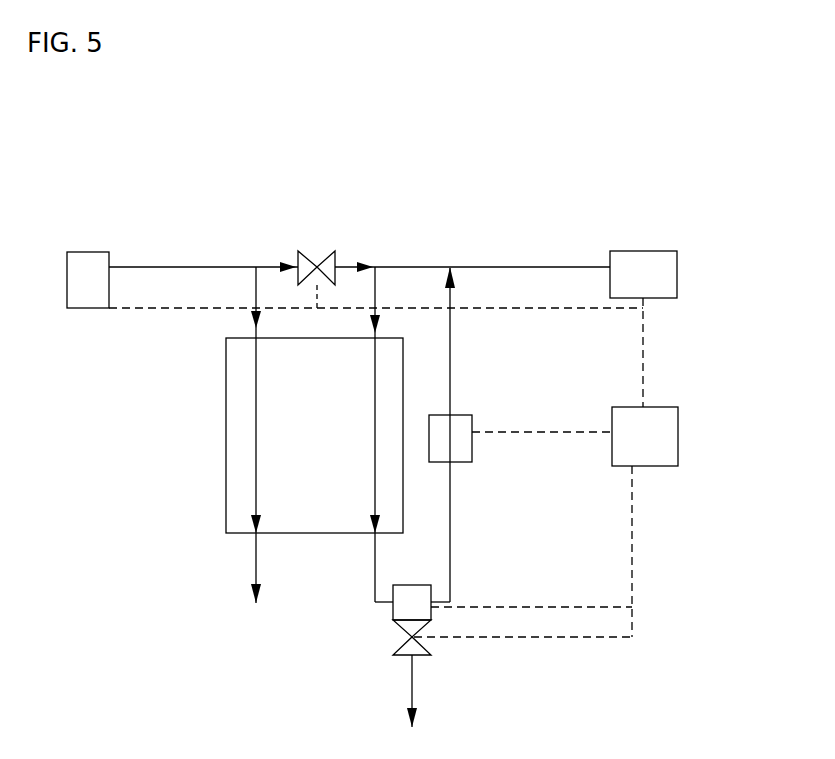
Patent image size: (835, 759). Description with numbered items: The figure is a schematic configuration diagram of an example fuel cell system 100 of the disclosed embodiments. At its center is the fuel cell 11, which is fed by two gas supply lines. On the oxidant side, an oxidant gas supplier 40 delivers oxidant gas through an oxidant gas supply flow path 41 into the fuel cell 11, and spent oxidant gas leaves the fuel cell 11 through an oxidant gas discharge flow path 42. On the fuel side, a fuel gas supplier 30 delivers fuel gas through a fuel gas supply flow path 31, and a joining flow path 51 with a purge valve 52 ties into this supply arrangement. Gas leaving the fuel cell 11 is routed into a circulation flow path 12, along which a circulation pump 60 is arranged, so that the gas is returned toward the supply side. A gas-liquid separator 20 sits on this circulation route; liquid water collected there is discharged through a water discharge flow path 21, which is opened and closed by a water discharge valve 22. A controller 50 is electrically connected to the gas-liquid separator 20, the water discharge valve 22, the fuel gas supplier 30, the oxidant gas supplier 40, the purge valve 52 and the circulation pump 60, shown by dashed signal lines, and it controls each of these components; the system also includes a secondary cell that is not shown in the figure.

The fuel cell system 100 is at (738, 138).
The oxidant gas supplier 40 is at (93, 310).
The oxidant gas supply flow path 41 is at (185, 267).
The joining flow path 51 is at (272, 267).
The purge valve 52 is at (316, 253).
The fuel gas supply flow path 31 is at (562, 267).
The fuel gas supplier 30 is at (652, 251).
The controller 50 is at (678, 453).
The circulation pump 60 is at (472, 415).
The fuel cell 11 is at (226, 502).
The oxidant gas discharge flow path 42 is at (256, 543).
The circulation flow path 12 is at (450, 580).
The gas-liquid separator 20 is at (393, 617).
The water discharge valve 22 is at (396, 652).
The water discharge flow path 21 is at (412, 682).